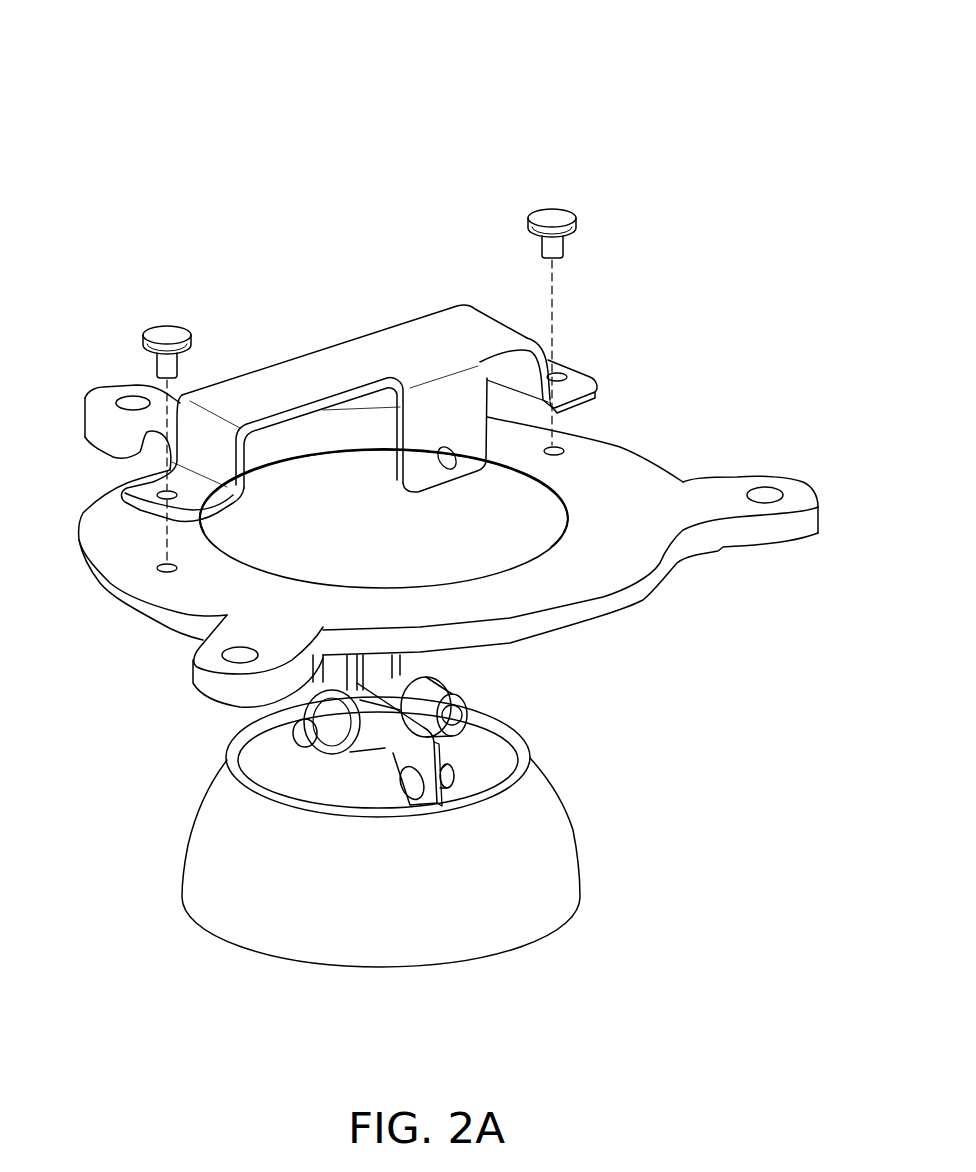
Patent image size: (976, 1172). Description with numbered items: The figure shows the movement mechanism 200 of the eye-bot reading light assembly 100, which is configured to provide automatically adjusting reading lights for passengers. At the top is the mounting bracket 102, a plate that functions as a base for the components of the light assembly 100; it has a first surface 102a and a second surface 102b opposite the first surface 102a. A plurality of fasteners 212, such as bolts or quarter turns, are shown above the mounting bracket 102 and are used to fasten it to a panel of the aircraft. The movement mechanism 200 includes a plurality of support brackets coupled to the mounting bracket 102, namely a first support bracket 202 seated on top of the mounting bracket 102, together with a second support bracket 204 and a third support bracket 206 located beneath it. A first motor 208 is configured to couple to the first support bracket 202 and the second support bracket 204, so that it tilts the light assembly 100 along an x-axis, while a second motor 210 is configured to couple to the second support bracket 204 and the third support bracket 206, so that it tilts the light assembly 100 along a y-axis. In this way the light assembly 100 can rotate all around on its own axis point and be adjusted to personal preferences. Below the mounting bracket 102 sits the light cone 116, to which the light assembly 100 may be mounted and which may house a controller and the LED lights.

The light assembly 100 is at (210, 142).
The movement mechanism 200 is at (175, 277).
The mounting bracket 102 is at (665, 497).
The first surface 102a is at (166, 658).
The second surface 102b is at (608, 470).
The first support bracket 202 is at (322, 372).
The fasteners 212 is at (551, 218).
The light cone 116 is at (360, 936).
The second support bracket 204 is at (333, 675).
The third support bracket 206 is at (400, 740).
The first motor 208 is at (457, 718).
The second motor 210 is at (340, 720).